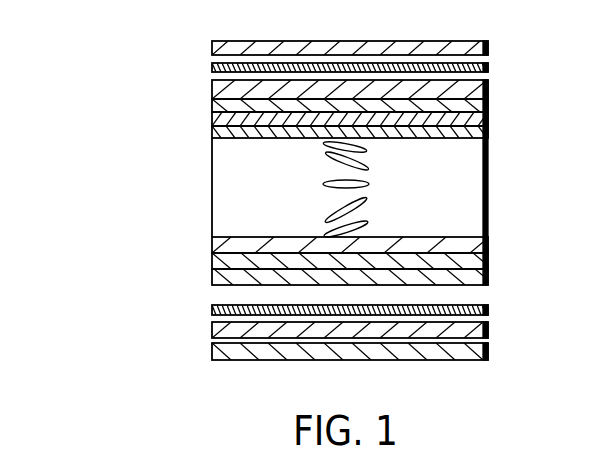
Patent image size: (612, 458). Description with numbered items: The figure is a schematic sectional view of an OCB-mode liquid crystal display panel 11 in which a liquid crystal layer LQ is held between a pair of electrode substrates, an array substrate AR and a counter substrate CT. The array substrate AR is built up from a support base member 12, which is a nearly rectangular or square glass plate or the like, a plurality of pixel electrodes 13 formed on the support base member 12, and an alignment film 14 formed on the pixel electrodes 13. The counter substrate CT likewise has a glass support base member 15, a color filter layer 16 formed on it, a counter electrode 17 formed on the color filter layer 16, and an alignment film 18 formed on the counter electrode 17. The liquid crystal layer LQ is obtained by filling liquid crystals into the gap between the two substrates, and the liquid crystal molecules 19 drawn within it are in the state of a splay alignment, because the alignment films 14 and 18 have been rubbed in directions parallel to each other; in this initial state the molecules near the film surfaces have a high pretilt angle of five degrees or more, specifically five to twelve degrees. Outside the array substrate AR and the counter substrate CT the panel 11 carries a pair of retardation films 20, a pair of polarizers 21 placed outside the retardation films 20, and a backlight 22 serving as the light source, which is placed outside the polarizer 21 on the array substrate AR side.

The liquid crystal display panel 11 is at (196, 38).
The support base member 12 is at (488, 275).
The pixel electrodes 13 is at (488, 259).
The alignment film 14 is at (488, 240).
The support base member 15 is at (488, 84).
The color filter layer 16 is at (488, 100).
The counter electrode 17 is at (488, 118).
The alignment film 18 is at (488, 137).
The liquid crystal molecules 19 is at (367, 198).
The retardation films 20 is at (488, 66).
The polarizers 21 is at (488, 44).
The backlight 22 is at (489, 350).
The liquid crystal layer LQ is at (488, 175).
The counter substrate CT is at (565, 63).
The array substrate AR is at (565, 218).